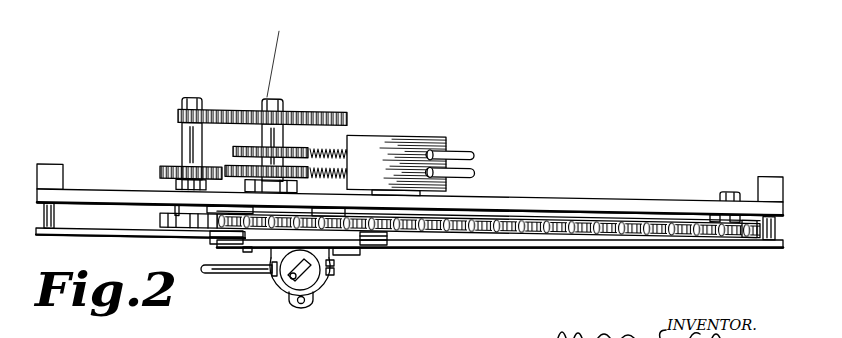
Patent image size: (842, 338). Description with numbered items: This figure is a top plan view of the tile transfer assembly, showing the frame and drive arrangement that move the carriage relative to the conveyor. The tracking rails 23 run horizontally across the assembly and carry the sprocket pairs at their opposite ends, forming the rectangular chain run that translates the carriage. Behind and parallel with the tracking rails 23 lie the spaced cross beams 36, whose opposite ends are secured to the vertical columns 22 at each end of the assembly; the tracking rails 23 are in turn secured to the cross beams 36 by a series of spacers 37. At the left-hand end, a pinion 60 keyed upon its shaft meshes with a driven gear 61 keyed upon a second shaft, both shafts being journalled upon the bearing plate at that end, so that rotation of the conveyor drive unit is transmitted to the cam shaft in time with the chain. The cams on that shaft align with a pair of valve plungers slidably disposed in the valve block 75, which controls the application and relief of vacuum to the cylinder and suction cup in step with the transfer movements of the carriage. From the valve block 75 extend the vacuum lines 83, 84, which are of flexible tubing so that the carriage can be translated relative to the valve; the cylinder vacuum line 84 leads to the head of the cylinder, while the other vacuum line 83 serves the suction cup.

The vertical column 22 is at (62, 165).
The tracking rail 23 is at (114, 236).
The cross beam 36 is at (108, 176).
The spacer 37 is at (55, 217).
The pinion 60 is at (178, 113).
The driven gear 61 is at (347, 115).
The valve block 75 is at (445, 137).
The vacuum line 83 is at (472, 174).
The cylinder vacuum line 84 is at (472, 152).